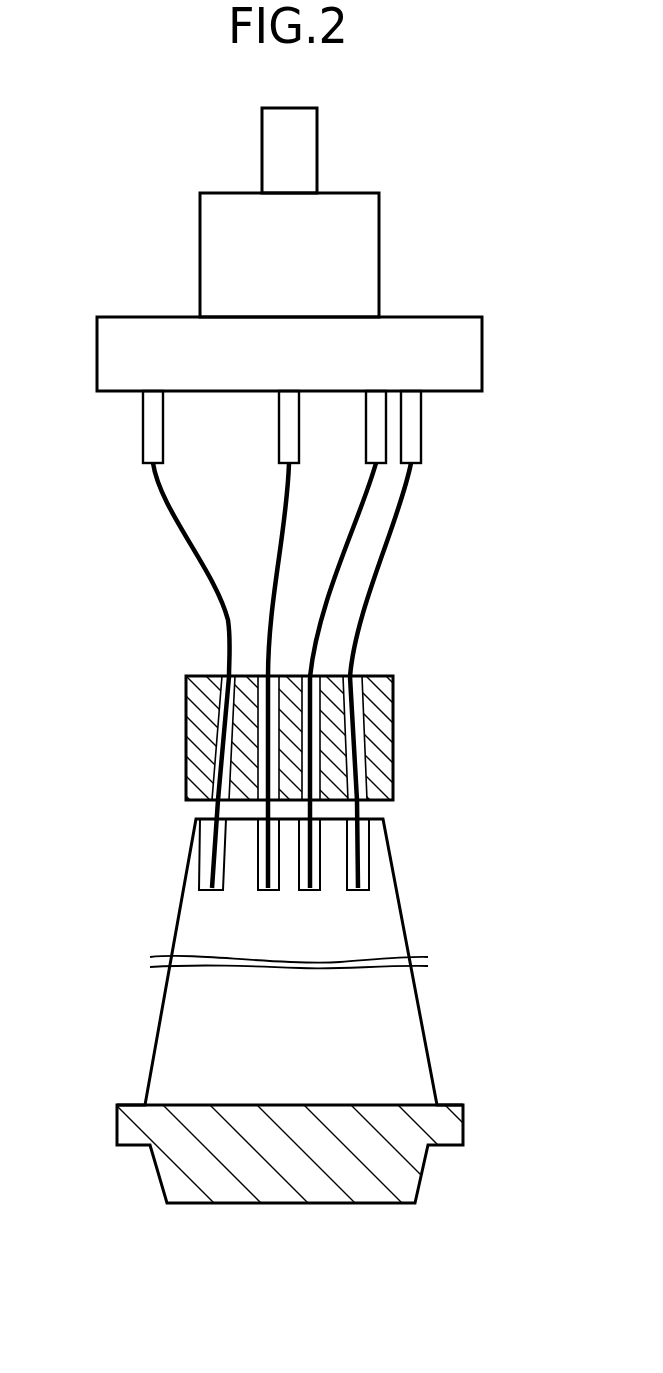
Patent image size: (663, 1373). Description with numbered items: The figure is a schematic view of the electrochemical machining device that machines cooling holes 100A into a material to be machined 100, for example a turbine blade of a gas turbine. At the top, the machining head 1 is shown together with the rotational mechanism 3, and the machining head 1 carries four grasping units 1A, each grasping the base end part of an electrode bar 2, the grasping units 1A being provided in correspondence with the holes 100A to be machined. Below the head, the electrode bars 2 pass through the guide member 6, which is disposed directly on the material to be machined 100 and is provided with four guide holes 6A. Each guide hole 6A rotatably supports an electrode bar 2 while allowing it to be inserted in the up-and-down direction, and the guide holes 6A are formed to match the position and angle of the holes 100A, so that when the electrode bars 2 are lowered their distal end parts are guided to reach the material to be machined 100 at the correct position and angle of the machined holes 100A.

The machining head 1 is at (200, 256).
The rotational mechanism 3 is at (97, 352).
The grasping unit 1A is at (142, 426).
The electrode bar 2 is at (206, 572).
The guide member 6 is at (393, 690).
The guide hole 6A is at (262, 738).
The material to be machined 100 is at (387, 833).
The cooling hole 100A is at (366, 863).